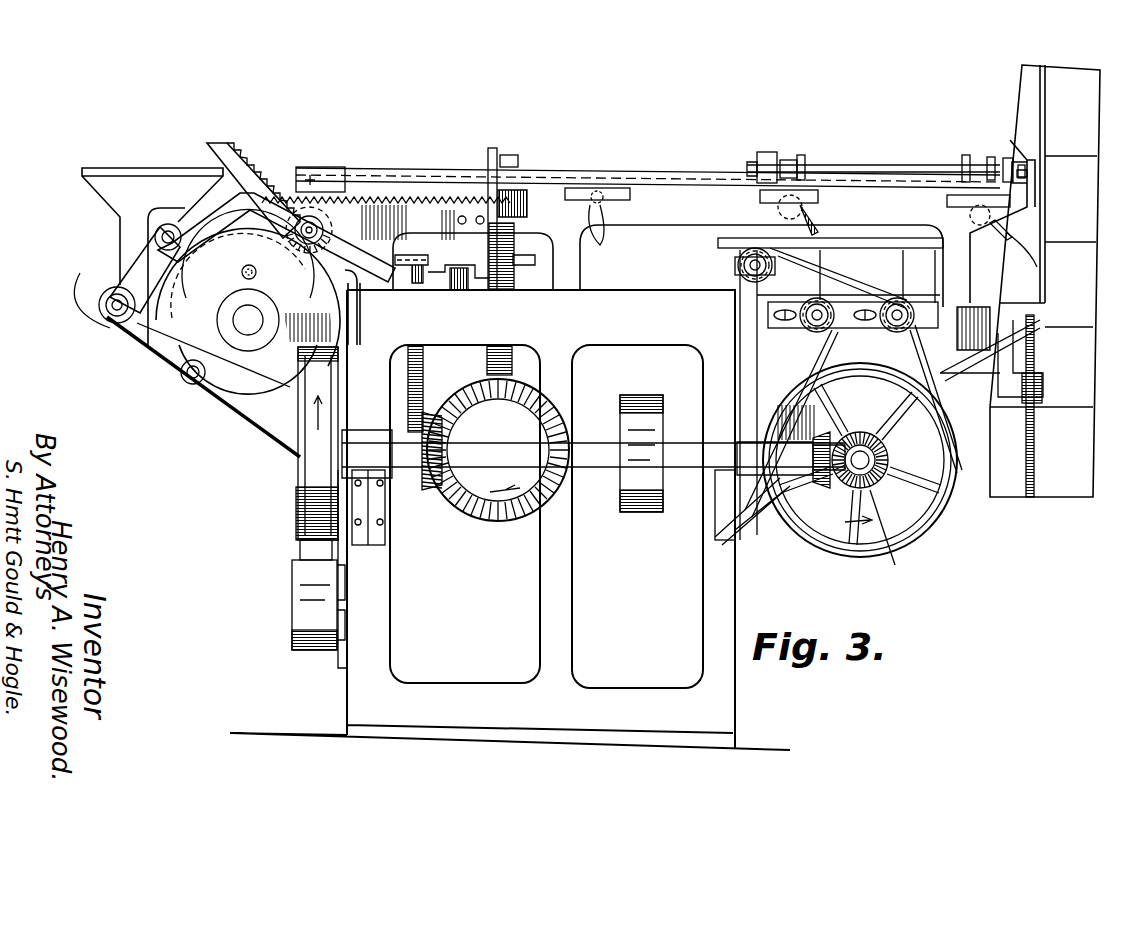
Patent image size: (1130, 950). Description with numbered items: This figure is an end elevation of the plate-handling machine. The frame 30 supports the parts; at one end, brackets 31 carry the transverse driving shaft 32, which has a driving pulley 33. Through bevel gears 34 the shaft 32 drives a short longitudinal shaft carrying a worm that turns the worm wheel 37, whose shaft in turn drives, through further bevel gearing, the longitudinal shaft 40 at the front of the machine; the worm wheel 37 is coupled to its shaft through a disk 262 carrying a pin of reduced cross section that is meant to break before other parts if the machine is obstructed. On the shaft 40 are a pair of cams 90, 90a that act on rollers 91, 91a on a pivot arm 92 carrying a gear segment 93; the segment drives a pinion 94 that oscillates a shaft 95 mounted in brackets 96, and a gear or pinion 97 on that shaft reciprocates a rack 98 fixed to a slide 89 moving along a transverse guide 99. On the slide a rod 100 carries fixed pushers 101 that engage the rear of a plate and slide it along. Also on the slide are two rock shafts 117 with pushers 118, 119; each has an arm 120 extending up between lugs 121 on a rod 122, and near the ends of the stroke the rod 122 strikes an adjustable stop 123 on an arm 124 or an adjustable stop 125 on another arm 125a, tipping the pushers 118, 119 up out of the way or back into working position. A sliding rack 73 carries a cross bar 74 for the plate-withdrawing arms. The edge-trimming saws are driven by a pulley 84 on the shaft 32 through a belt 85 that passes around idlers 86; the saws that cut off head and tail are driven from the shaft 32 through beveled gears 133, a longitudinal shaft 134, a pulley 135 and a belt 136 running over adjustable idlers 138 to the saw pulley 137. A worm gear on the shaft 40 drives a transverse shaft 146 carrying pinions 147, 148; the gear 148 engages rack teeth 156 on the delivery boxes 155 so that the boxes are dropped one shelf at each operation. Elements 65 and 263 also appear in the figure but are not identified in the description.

The frame 30 is at (460, 690).
The brackets 31 is at (372, 532).
The transverse driving shaft 32 is at (665, 467).
The driving pulley 33 is at (642, 514).
The bevel gears 34 is at (433, 470).
The worm wheel 37 is at (512, 345).
The longitudinal shaft 40 is at (245, 323).
The gear 65 is at (420, 356).
The sliding rack 73 is at (463, 288).
The cross bar 74 is at (462, 285).
The pulley 84 is at (297, 487).
The belt 85 is at (298, 470).
The idlers 86 is at (292, 614).
The slide 89 is at (658, 168).
The cam 90 is at (107, 270).
The cam 90a is at (237, 398).
The roller 91 is at (125, 236).
The roller 91a is at (190, 380).
The pivot arm 92 is at (140, 268).
The gear segment 93 is at (222, 148).
The pinion 94 is at (372, 190).
The shaft 95 is at (312, 222).
The brackets 96 is at (358, 300).
The gear or pinion 97 is at (455, 215).
The rack 98 is at (298, 168).
The transverse guide 99 is at (135, 170).
The rod 100 is at (600, 190).
The pushers 101 is at (614, 239).
The rock shafts 117 is at (770, 206).
The pusher 118 is at (820, 215).
The pusher 119 is at (1000, 245).
The arm 120 is at (785, 160).
The lugs 121 is at (772, 152).
The rod 122 is at (870, 172).
The adjustable stop 123 is at (1020, 150).
The arm 124 is at (1030, 185).
The adjustable stop 125 is at (518, 161).
The arm 125a is at (493, 160).
The beveled gears 133 is at (858, 470).
The longitudinal shaft 134 is at (907, 542).
The pulley 135 is at (920, 516).
The belt 136 is at (945, 403).
The saw pulley 137 is at (738, 262).
The adjustable idlers 138 is at (833, 335).
The transverse shaft 146 is at (970, 380).
The gear or pinion 147 is at (808, 330).
The gear or pinion 148 is at (1042, 395).
The delivery boxes 155 is at (1078, 72).
The rack teeth 156 is at (1035, 465).
The disk 262 is at (243, 275).
The arm 263 is at (137, 325).